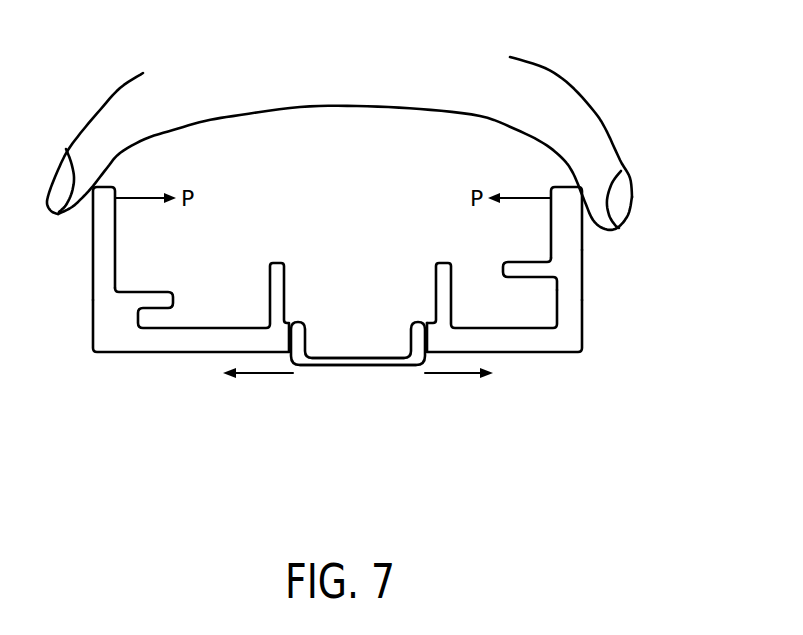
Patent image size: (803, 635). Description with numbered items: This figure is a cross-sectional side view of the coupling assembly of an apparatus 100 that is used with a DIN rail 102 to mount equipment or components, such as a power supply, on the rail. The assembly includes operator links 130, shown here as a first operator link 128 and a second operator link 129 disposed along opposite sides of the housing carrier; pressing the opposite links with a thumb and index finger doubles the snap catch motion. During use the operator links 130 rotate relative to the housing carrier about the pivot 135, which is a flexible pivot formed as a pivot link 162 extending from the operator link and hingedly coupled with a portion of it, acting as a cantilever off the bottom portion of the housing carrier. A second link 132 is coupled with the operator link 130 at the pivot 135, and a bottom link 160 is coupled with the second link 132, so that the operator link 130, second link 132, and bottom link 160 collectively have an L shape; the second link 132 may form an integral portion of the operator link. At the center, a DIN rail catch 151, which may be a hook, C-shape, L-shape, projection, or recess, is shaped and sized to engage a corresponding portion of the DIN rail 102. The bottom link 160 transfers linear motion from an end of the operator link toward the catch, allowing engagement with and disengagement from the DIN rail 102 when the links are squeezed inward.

The apparatus 100 is at (670, 383).
The DIN rail 102 is at (343, 362).
The first operator link 128 is at (115, 251).
The second operator link 129 is at (551, 222).
The operator link 130 is at (372, 302).
The second link 132 is at (573, 320).
The pivot 135 is at (573, 270).
The DIN rail catch 151 is at (358, 374).
The bottom link 160 is at (530, 353).
The pivot link 162 is at (531, 270).